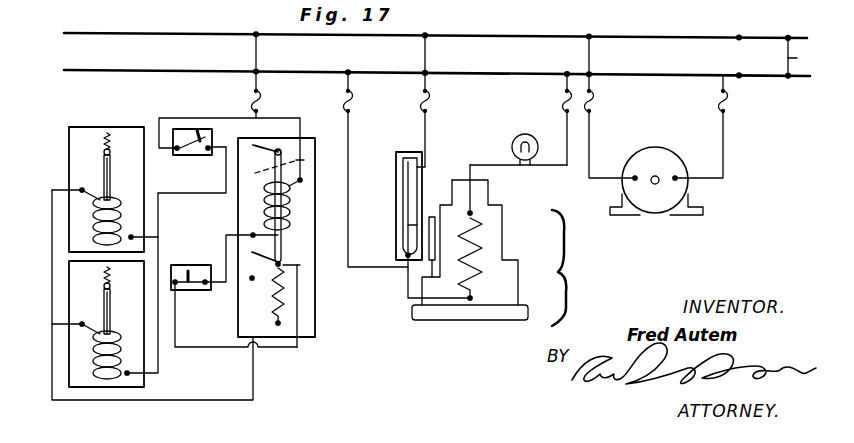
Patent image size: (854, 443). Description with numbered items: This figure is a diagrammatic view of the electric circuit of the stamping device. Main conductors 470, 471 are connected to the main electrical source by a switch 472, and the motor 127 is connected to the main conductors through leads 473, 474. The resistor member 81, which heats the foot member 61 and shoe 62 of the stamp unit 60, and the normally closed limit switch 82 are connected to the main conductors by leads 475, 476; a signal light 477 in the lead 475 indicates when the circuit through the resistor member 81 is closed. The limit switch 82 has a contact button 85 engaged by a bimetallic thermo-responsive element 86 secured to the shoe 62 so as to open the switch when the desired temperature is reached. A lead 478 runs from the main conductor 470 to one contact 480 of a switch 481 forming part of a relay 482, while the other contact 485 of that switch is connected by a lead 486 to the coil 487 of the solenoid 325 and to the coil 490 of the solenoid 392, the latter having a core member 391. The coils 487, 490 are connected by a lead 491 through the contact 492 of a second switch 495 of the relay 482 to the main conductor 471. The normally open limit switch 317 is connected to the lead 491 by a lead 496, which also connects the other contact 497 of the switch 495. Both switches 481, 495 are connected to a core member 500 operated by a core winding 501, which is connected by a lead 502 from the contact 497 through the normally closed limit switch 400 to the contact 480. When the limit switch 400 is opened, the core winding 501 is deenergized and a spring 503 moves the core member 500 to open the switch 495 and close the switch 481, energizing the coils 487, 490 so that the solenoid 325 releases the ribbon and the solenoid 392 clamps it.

The stamp unit 60 is at (573, 268).
The foot member 61 is at (528, 307).
The shoe 62 is at (519, 282).
The resistor member 81 is at (470, 257).
The limit switch 82 is at (396, 175).
The contact button 85 is at (429, 222).
The thermo-responsive element 86 is at (426, 255).
The motor 127 is at (689, 196).
The limit switch 317 is at (194, 156).
The solenoid 325 is at (145, 352).
The core member 391 is at (103, 151).
The solenoid 392 is at (69, 165).
The limit switch 400 is at (224, 276).
The main conductor 470 is at (655, 74).
The main conductor 471 is at (712, 41).
The switch 472 is at (760, 75).
The lead 473 is at (724, 130).
The lead 474 is at (590, 128).
The lead 475 is at (552, 167).
The lead 476 is at (423, 122).
The signal light 477 is at (532, 128).
The lead 478 is at (350, 137).
The contact 480 is at (290, 264).
The switch 481 is at (288, 265).
The relay 482 is at (339, 335).
The contact 485 is at (252, 279).
The lead 486 is at (232, 400).
The coil 487 is at (105, 378).
The coil 490 is at (97, 198).
The lead 491 is at (158, 229).
The contact 492 is at (253, 145).
The second switch 495 is at (267, 148).
The lead 496 is at (196, 118).
The contact 497 is at (301, 158).
The core member 500 is at (275, 176).
The core winding 501 is at (268, 211).
The lead 502 is at (213, 347).
The spring 503 is at (280, 298).